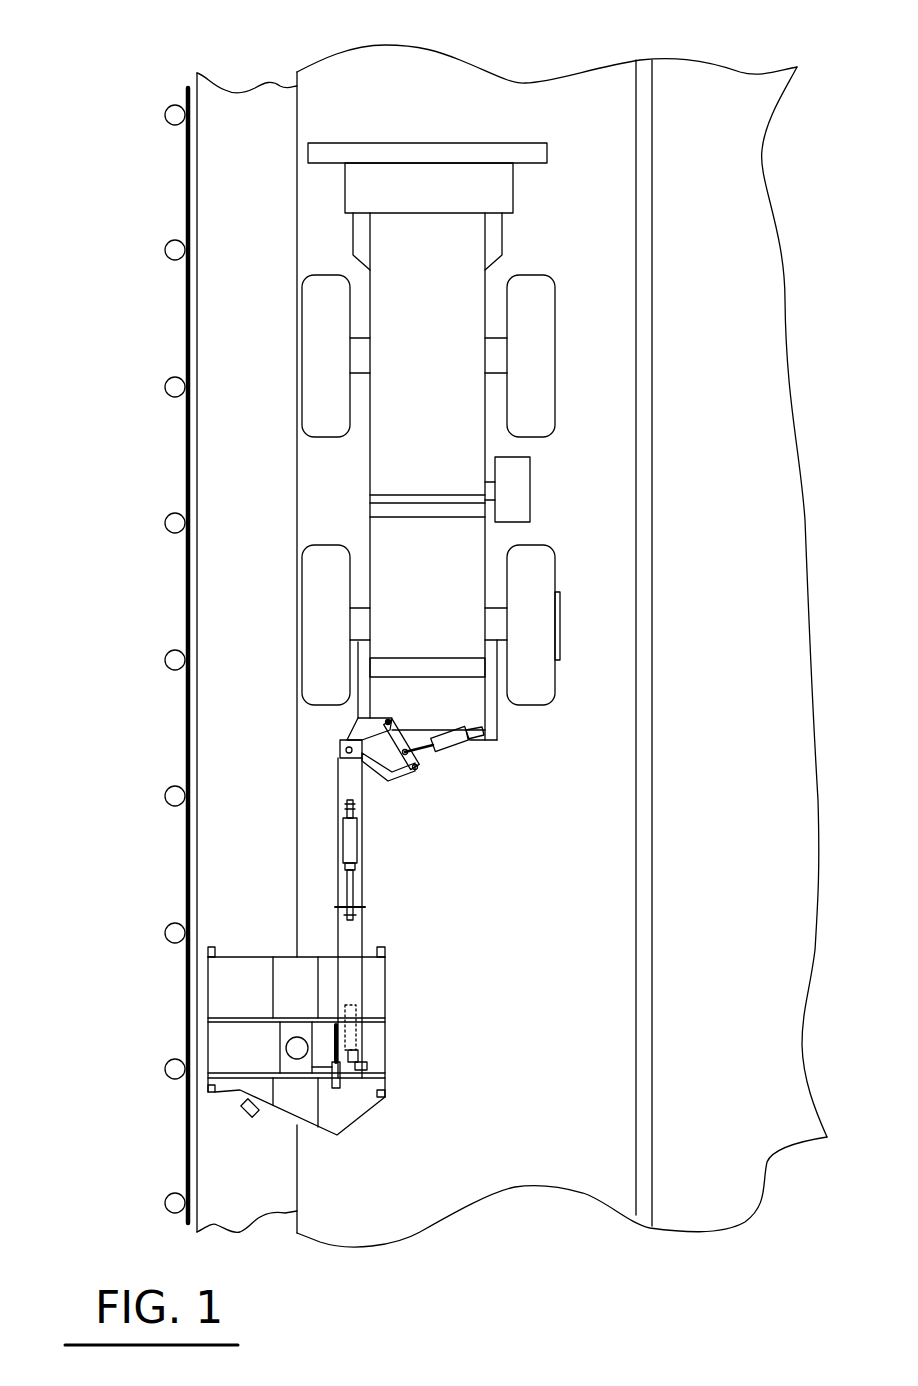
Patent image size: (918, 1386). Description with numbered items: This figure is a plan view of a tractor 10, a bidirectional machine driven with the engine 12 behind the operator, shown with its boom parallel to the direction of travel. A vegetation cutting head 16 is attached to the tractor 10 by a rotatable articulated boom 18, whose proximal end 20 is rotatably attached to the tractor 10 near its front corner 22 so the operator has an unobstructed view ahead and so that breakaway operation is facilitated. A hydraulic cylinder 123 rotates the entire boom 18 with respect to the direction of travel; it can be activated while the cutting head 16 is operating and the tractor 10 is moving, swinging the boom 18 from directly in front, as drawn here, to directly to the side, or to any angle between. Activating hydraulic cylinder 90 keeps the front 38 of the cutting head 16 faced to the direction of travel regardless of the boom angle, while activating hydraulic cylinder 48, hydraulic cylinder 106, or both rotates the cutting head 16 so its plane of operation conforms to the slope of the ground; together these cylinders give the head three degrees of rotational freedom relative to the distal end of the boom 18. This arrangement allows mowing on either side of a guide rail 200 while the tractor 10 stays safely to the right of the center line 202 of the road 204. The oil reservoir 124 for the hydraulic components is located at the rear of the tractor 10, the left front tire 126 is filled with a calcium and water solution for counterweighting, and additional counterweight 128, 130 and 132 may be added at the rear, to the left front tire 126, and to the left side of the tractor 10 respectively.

The tractor 10 is at (370, 462).
The engine 12 is at (457, 330).
The vegetation cutting head 16 is at (258, 955).
The rotatable articulated boom 18 is at (365, 870).
The proximal end 20 is at (338, 752).
The front corner 22 is at (348, 733).
The front 38 is at (278, 1108).
The hydraulic cylinder 48 is at (360, 1005).
The hydraulic cylinder 90 is at (338, 1088).
The hydraulic cylinder 106 is at (367, 1065).
The hydraulic cylinder 123 is at (455, 750).
The oil reservoir 124 is at (345, 185).
The left front tire 126 is at (557, 700).
The counterweight 128 is at (428, 143).
The counterweight 130 is at (560, 633).
The counterweight 132 is at (530, 500).
The guide rail 200 is at (165, 240).
The center line 202 is at (652, 137).
The road 204 is at (525, 83).